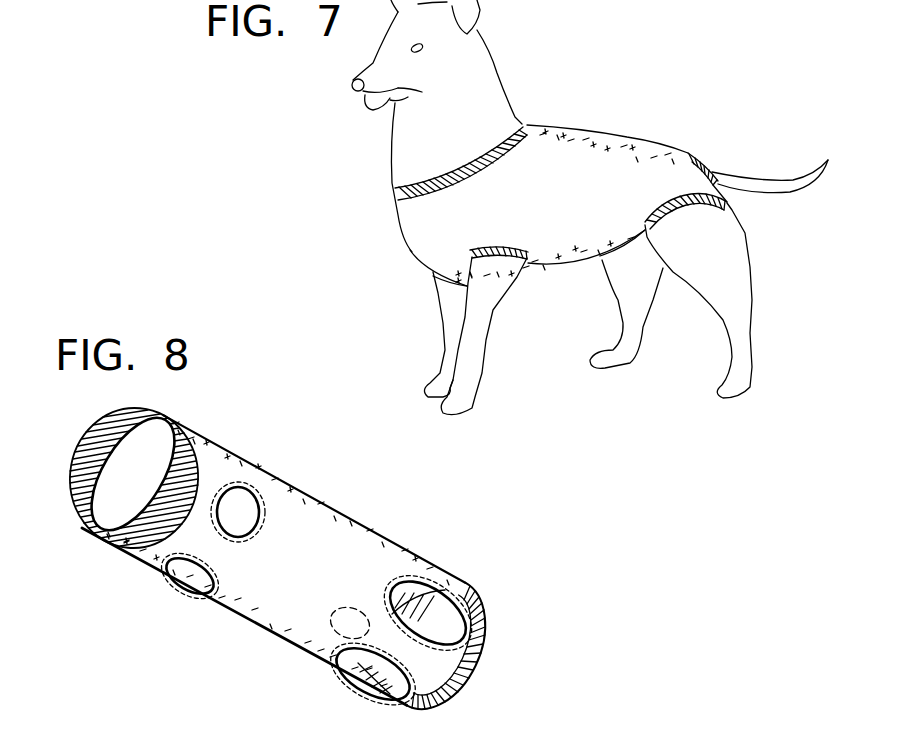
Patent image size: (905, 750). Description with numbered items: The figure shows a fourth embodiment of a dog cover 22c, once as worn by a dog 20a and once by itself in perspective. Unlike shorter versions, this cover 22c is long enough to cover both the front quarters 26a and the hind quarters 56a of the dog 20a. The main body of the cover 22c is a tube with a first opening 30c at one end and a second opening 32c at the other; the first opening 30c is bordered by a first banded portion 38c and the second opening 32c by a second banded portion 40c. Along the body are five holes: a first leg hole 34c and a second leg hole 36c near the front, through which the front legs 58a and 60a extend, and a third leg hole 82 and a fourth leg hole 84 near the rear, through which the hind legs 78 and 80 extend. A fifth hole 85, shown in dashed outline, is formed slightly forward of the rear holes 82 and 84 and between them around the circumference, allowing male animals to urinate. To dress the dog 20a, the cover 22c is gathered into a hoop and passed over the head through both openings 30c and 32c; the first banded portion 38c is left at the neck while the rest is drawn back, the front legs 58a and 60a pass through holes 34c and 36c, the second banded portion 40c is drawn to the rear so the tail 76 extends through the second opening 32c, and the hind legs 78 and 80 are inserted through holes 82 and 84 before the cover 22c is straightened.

In FIG. 7, the dog 20a is at (560, 68).
In FIG. 7, the cover 22c is at (577, 128).
In FIG. 8, the cover 22c is at (400, 538).
In FIG. 7, the front quarters 26a is at (380, 182).
In FIG. 8, the first opening 30c is at (136, 465).
In FIG. 8, the second opening 32c is at (490, 640).
In FIG. 7, the first leg hole 34c is at (500, 262).
In FIG. 8, the first leg hole 34c is at (247, 507).
In FIG. 7, the second leg hole 36c is at (458, 290).
In FIG. 8, the second leg hole 36c is at (185, 577).
In FIG. 7, the first banded portion 38c is at (393, 207).
In FIG. 8, the first banded portion 38c is at (130, 537).
In FIG. 7, the second banded portion 40c is at (712, 168).
In FIG. 8, the second banded portion 40c is at (467, 668).
In FIG. 7, the hind quarters 56a is at (706, 142).
In FIG. 7, the front leg 58a is at (467, 397).
In FIG. 7, the front leg 60a is at (450, 358).
In FIG. 7, the tail 76 is at (795, 180).
In FIG. 7, the hind leg 78 is at (738, 330).
In FIG. 7, the hind leg 80 is at (640, 322).
In FIG. 7, the third leg hole 82 is at (707, 207).
In FIG. 8, the third leg hole 82 is at (438, 612).
In FIG. 7, the fourth leg hole 84 is at (630, 248).
In FIG. 8, the fourth leg hole 84 is at (357, 670).
In FIG. 8, the fifth hole 85 is at (333, 630).